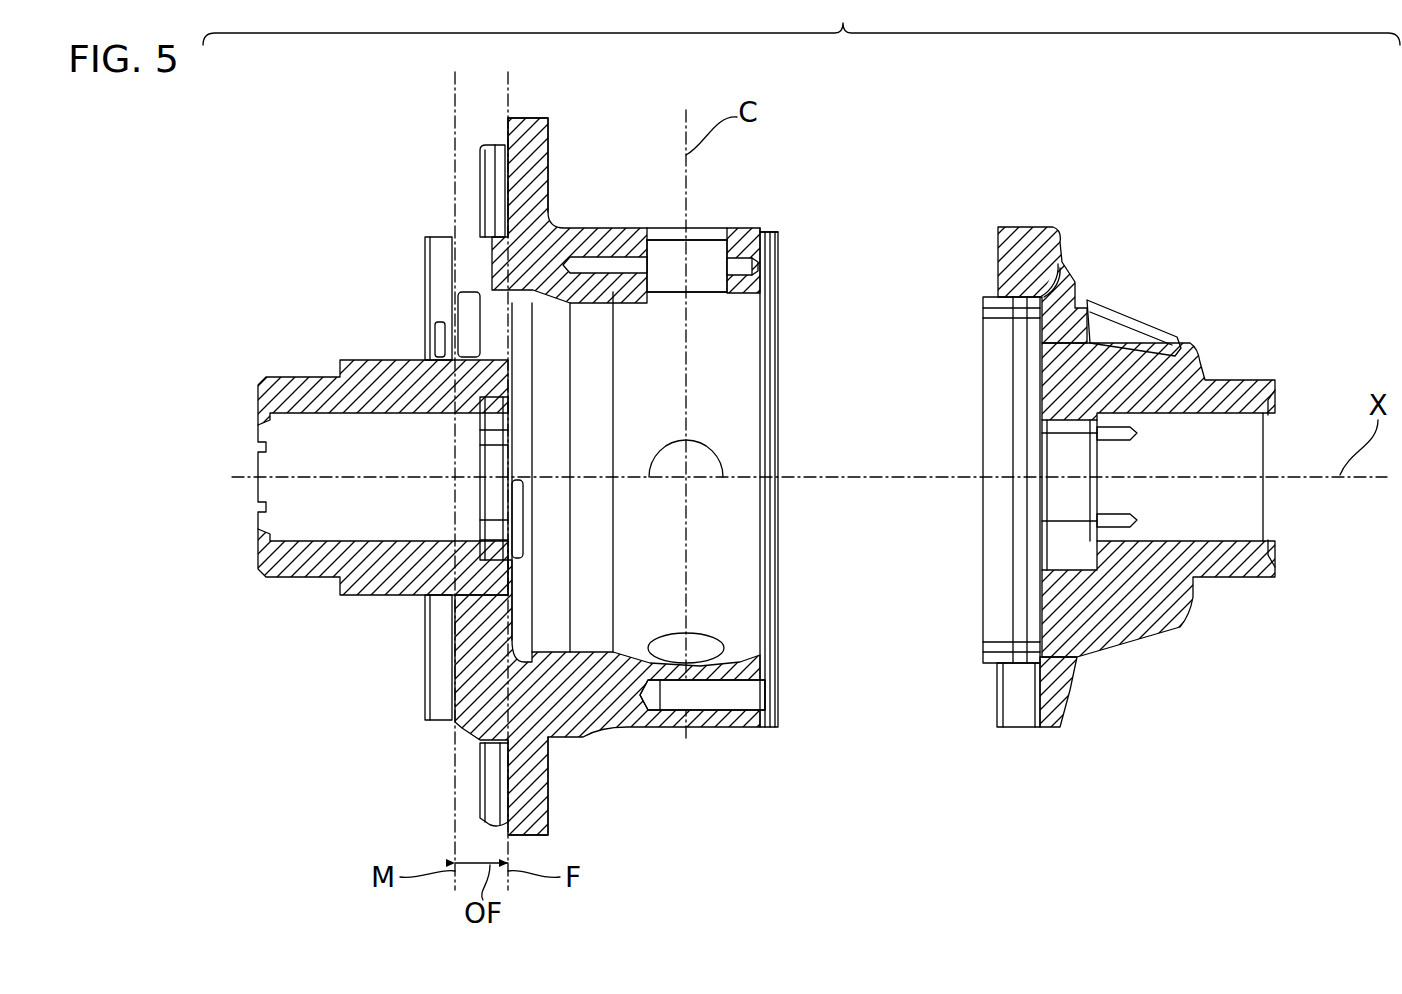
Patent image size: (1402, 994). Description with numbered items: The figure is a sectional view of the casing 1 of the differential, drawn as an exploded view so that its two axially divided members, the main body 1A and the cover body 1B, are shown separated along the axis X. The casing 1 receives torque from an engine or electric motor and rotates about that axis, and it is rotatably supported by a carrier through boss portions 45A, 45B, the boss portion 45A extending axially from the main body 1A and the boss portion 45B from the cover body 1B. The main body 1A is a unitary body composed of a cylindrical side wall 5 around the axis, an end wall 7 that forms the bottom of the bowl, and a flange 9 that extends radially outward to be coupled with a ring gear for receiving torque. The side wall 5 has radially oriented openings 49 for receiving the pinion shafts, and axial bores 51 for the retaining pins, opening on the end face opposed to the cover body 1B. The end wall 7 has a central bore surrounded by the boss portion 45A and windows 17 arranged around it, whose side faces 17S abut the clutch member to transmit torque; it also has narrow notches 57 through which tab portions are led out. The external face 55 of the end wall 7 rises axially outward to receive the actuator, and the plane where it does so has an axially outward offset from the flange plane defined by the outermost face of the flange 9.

The casing 1 is at (1007, 100).
The main body 1A is at (750, 190).
The cover body 1B is at (1036, 208).
The side wall 5 is at (615, 225).
The end wall 7 is at (512, 610).
The flange 9 is at (528, 118).
The windows 17 is at (460, 312).
The side faces of the windows 17S is at (512, 325).
The boss portion 45A is at (305, 377).
The boss portion 45B is at (1240, 380).
The openings 49 is at (705, 275).
The bores 51 is at (790, 245).
The external face 55 is at (455, 703).
The notches 57 is at (470, 240).